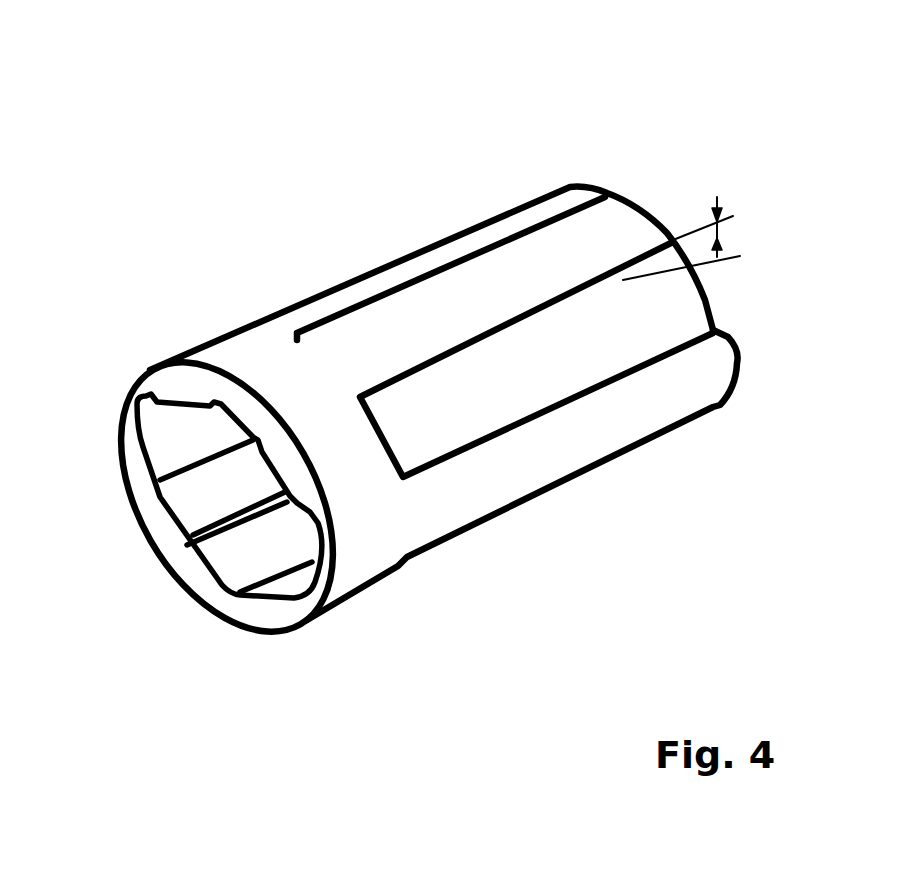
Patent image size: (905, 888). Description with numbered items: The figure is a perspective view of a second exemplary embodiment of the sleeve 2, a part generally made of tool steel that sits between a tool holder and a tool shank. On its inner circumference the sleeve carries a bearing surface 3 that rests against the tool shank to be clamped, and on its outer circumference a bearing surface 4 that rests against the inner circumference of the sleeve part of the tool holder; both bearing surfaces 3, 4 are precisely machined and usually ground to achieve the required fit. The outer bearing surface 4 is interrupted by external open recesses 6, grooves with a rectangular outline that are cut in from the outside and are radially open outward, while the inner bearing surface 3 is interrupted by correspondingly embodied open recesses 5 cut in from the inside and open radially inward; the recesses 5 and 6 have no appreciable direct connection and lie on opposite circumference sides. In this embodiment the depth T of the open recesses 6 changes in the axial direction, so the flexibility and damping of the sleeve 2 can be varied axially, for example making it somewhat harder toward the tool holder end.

The sleeve 2 is at (384, 190).
The bearing surface 3 is at (183, 508).
The bearing surface 4 is at (230, 360).
The open recesses 5 is at (152, 428).
The open recesses 6 is at (636, 323).